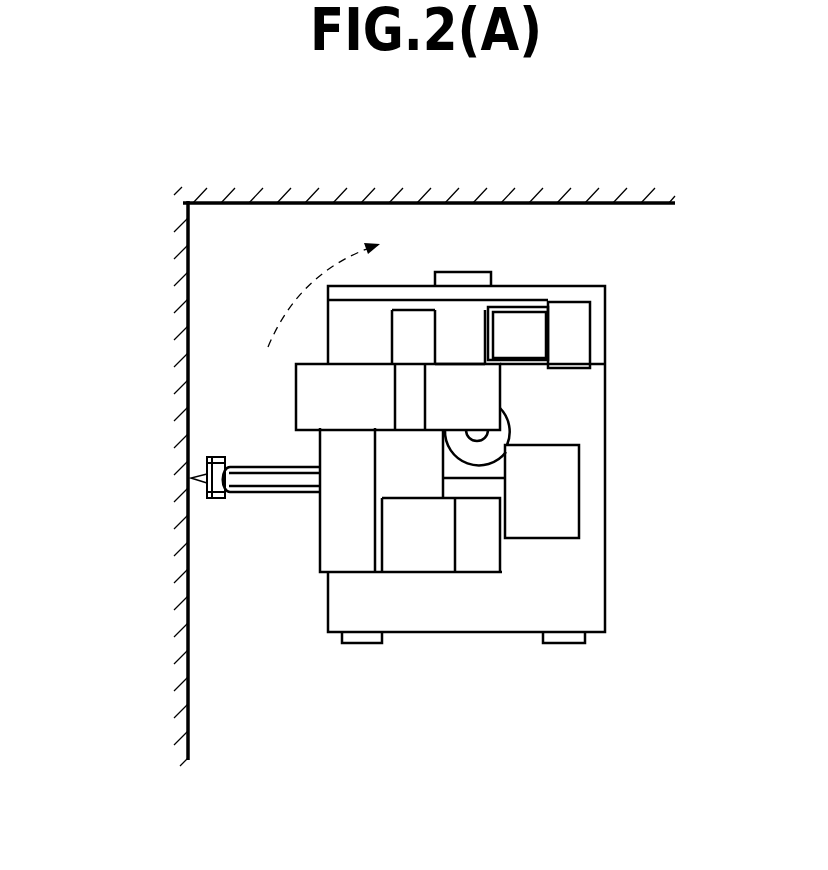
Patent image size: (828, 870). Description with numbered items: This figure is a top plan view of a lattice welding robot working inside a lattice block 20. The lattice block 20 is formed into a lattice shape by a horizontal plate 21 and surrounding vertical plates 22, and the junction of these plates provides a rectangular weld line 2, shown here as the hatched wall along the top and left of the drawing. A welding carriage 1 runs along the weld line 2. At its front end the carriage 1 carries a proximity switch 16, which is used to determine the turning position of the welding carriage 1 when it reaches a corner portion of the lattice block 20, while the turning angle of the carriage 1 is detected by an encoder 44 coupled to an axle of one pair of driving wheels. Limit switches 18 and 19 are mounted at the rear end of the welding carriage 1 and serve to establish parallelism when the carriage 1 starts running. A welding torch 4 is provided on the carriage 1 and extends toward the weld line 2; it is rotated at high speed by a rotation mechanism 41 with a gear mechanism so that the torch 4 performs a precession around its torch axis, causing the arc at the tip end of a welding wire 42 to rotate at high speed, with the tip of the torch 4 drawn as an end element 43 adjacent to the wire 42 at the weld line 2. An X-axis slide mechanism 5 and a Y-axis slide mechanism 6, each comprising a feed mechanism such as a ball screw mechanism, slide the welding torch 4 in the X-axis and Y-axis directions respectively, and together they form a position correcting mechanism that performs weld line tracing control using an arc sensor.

The welding carriage 1 is at (458, 633).
The weld line 2 is at (188, 685).
The welding torch 4 is at (260, 493).
The X-axis slide mechanism 5 is at (568, 308).
The Y-axis slide mechanism 6 is at (490, 402).
The proximity switch 16 is at (472, 272).
The limit switch 18 is at (355, 645).
The limit switch 19 is at (560, 645).
The lattice block 20 is at (292, 193).
The horizontal plate 21 is at (637, 610).
The vertical plate 22 is at (445, 140).
The rotation mechanism 41 is at (353, 562).
The welding wire 42 is at (192, 480).
The tip holder 43 is at (212, 456).
The encoder 44 is at (512, 428).